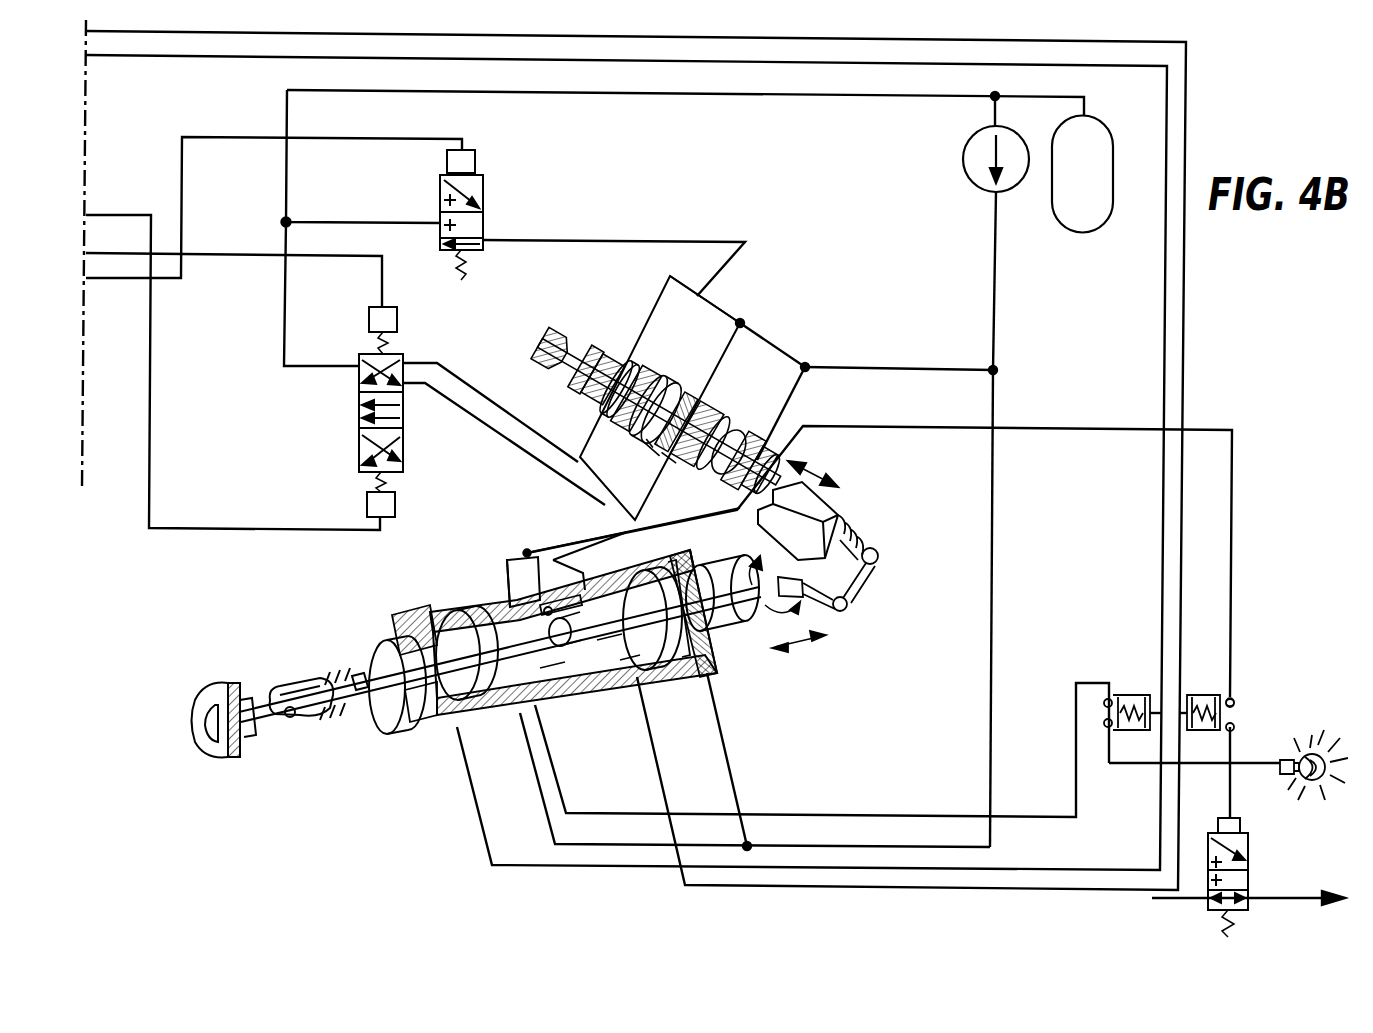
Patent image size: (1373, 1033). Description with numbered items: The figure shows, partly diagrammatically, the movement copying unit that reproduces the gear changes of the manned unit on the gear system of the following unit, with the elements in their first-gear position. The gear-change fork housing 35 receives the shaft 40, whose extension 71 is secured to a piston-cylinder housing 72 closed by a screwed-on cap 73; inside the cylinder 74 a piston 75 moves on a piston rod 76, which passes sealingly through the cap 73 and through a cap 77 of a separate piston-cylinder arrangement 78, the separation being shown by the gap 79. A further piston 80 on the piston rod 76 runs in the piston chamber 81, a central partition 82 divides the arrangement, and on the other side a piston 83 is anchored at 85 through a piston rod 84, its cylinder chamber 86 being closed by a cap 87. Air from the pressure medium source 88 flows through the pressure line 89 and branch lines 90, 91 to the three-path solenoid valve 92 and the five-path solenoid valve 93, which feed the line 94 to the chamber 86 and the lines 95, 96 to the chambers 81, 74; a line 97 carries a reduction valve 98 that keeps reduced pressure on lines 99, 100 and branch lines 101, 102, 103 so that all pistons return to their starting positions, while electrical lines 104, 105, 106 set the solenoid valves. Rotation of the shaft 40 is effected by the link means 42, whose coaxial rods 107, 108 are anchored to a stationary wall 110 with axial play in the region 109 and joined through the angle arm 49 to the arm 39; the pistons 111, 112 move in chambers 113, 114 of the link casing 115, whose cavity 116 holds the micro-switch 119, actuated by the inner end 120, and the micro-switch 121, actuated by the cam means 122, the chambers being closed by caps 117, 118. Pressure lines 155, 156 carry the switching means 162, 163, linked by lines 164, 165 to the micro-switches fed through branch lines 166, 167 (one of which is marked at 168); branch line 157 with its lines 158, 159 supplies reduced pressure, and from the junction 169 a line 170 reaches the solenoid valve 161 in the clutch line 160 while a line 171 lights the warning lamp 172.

The gear-change fork housing 35 is at (825, 500).
The arm 39 is at (858, 585).
The shaft 40 is at (873, 550).
The link means 42 is at (455, 570).
The outwardly bent angle arm 49 is at (825, 610).
The shaft extension 71 is at (735, 495).
The piston-cylinder housing 72 is at (740, 478).
The cap 73 is at (722, 415).
The cylinder 74 is at (715, 465).
The piston 75 is at (738, 438).
The piston rod 76 is at (683, 448).
The cap 77 is at (668, 430).
The piston-cylinder arrangement 78 is at (645, 410).
The gap 79 is at (705, 412).
The piston 80 is at (666, 392).
The piston chamber 81 is at (688, 392).
The central partition 82 is at (634, 372).
The piston 83 is at (608, 398).
The piston rod 84 is at (556, 330).
The anchorage 85 is at (588, 338).
The cylinder chamber 86 is at (590, 378).
The cap 87 is at (606, 350).
The pressure medium source 88 is at (1108, 135).
The pressure line 89 is at (738, 95).
The branch line 90 is at (375, 222).
The branch line 91 is at (285, 325).
The three-path solenoid valve 92 is at (486, 200).
The five-path solenoid valve 93 is at (359, 408).
The line 94 is at (575, 241).
The line 95 is at (455, 372).
The line 96 is at (495, 430).
The line 97 is at (992, 110).
The reduction valve 98 is at (962, 165).
The line 99 is at (994, 248).
The line 100 is at (920, 368).
The branch line 101 is at (787, 395).
The branch line 102 is at (722, 333).
The branch line 103 is at (668, 292).
The electrical line 104 is at (181, 168).
The electrical line 105 is at (255, 256).
The electrical line 106 is at (223, 530).
The rod 107 is at (418, 614).
The rod 108 is at (650, 662).
The region of axial play 109 is at (255, 690).
The stationary wall 110 is at (215, 760).
The piston 111 is at (470, 716).
The piston 112 is at (682, 665).
The piston-cylinder chamber 113 is at (400, 630).
The piston-cylinder chamber 114 is at (712, 662).
The link casing 115 is at (625, 680).
The cavity 116 is at (585, 690).
The cap 117 is at (385, 703).
The cap 118 is at (690, 566).
The micro-switch 119 is at (560, 698).
The inner end of rod 120 is at (465, 612).
The micro-switch 121 is at (563, 618).
The cam means 122 is at (540, 605).
The pressure line 155 is at (155, 58).
The pressure line 156 is at (242, 57).
The branch line 157 is at (992, 578).
The line 158 is at (728, 754).
The branch 159 is at (875, 846).
The line 160 is at (1270, 898).
The free-path solenoid valve 161 is at (1250, 848).
The fluid pressure actuated electrical switching means 162 is at (1140, 695).
The fluid pressure actuated electrical switching means 163 is at (1203, 695).
The electrical line 164 is at (1035, 816).
The line 165 is at (1232, 535).
The branch line 166 is at (527, 550).
The branch line 167 is at (505, 565).
The pivot 168 is at (508, 558).
The junction 169 is at (1232, 763).
The line 170 is at (1230, 791).
The line 171 is at (1250, 768).
The warning lamp 172 is at (1314, 753).